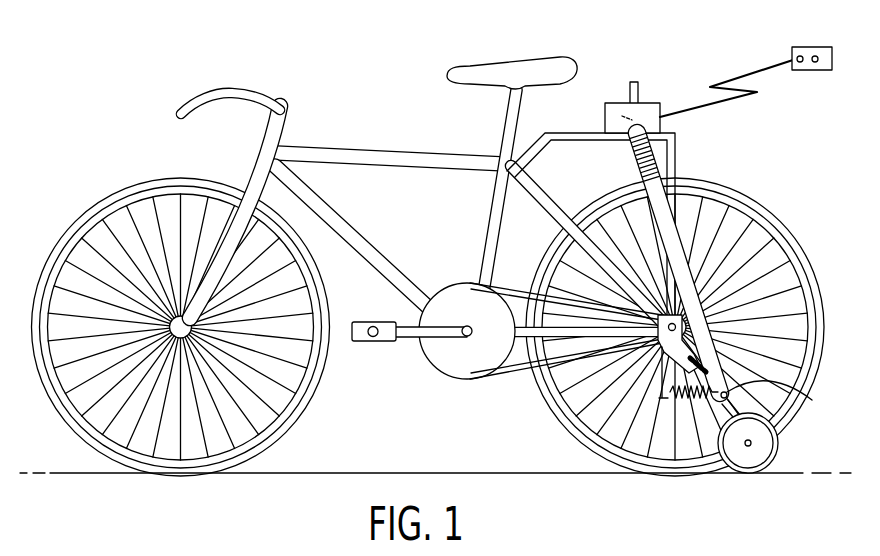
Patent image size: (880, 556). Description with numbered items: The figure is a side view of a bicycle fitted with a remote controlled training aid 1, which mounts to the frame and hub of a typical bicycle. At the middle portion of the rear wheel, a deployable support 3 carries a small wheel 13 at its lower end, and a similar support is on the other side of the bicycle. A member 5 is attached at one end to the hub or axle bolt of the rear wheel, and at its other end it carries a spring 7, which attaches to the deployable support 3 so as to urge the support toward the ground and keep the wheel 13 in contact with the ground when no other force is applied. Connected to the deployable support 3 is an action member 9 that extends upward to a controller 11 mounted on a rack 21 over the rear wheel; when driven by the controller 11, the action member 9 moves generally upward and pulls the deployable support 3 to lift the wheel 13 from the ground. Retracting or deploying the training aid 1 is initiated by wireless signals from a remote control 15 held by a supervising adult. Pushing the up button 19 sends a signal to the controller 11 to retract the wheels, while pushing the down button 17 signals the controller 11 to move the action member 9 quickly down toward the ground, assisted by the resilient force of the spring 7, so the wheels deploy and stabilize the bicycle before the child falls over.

The remote controlled training aid 1 is at (717, 270).
The deployable support 3 is at (790, 388).
The member 5 is at (660, 398).
The spring 7 is at (691, 398).
The action member 9 is at (646, 187).
The controller 11 is at (653, 103).
The wheel 13 is at (778, 462).
The remote control 15 is at (809, 69).
The down button 17 is at (815, 64).
The up button 19 is at (800, 64).
The rack 21 is at (578, 133).